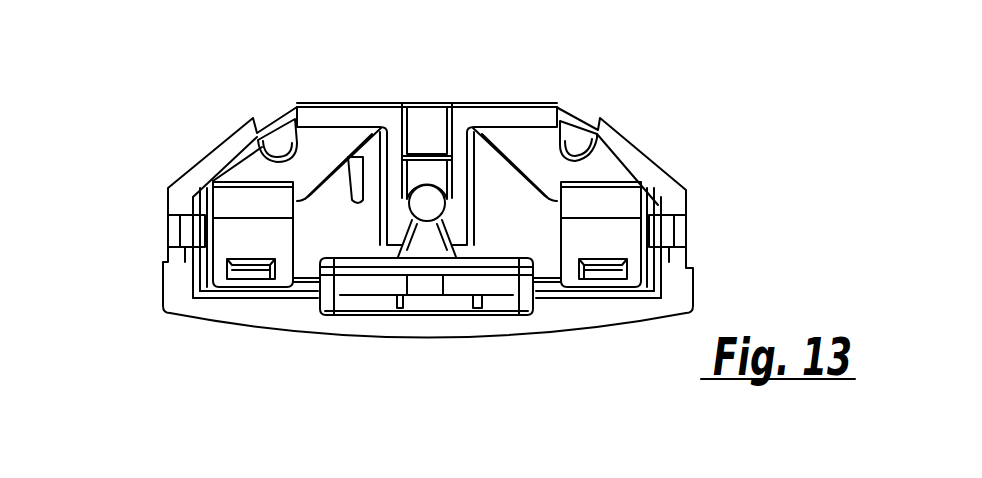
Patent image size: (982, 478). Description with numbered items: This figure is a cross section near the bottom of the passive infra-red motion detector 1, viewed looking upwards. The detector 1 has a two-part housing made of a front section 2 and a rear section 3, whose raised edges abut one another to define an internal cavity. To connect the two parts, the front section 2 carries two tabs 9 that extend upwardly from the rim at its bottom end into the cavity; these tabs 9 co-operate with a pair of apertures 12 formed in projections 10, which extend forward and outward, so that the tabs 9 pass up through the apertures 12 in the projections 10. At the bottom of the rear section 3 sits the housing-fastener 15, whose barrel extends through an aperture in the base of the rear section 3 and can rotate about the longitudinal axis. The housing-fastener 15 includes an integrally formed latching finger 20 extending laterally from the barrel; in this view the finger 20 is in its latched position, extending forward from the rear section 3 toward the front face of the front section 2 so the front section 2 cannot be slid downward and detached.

The passive infra-red motion detector 1 is at (188, 129).
The front section 2 is at (672, 298).
The rear section 3 is at (637, 165).
The tabs 9 is at (254, 274).
The projections 10 is at (230, 234).
The apertures 12 is at (227, 268).
The housing-fastener 15 is at (415, 238).
The latching finger 20 is at (428, 248).